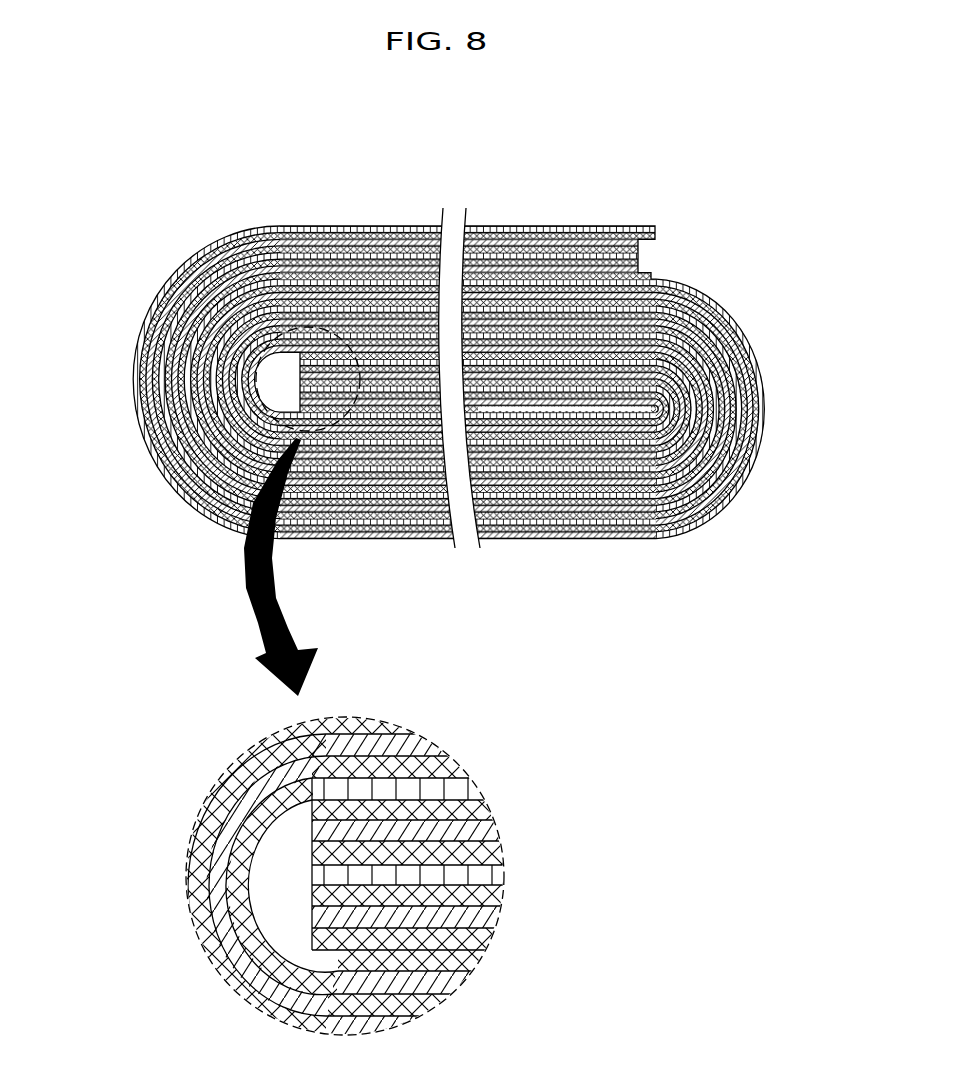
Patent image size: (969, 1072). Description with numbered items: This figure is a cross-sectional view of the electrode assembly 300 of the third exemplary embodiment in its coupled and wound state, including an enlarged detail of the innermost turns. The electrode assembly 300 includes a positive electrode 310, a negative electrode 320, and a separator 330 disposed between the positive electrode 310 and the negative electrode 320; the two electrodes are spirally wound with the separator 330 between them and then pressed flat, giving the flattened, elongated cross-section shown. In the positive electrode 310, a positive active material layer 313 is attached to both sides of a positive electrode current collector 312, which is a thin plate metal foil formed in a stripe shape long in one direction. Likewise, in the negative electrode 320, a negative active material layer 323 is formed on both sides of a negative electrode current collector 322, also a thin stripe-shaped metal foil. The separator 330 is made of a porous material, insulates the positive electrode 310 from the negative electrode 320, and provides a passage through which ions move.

The electrode assembly 300 is at (545, 204).
The positive electrode 310 is at (485, 677).
The positive electrode current collector 312 is at (575, 500).
The positive active material layer 313 is at (525, 482).
The negative electrode 320 is at (455, 776).
The negative electrode current collector 322 is at (680, 508).
The negative active material layer 323 is at (627, 522).
The separator 330 is at (317, 863).